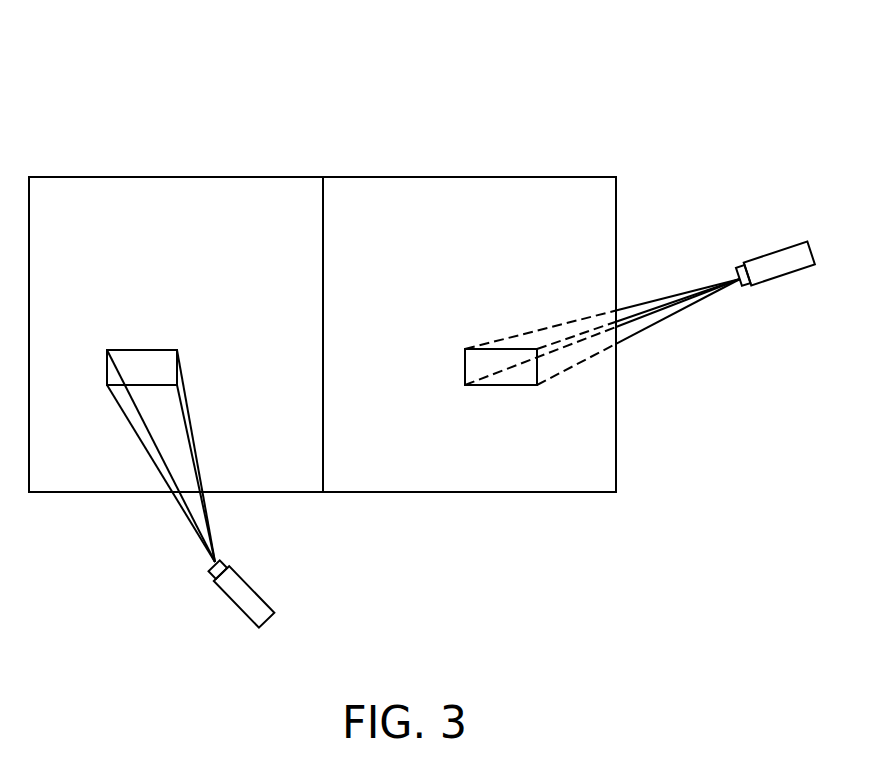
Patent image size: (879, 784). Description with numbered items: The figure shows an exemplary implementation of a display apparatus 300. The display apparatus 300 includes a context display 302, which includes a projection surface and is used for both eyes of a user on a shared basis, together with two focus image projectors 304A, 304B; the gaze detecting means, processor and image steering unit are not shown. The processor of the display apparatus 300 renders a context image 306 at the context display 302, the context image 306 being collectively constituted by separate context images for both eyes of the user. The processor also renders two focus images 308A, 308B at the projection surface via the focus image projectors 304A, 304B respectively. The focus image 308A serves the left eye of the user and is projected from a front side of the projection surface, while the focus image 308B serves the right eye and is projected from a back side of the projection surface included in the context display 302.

The display apparatus 300 is at (676, 67).
The context display 302 is at (377, 321).
The context image 306 is at (317, 299).
The focus image 308A is at (128, 339).
The focus image 308B is at (543, 444).
The focus image projector 304A is at (271, 578).
The focus image projector 304B is at (715, 297).